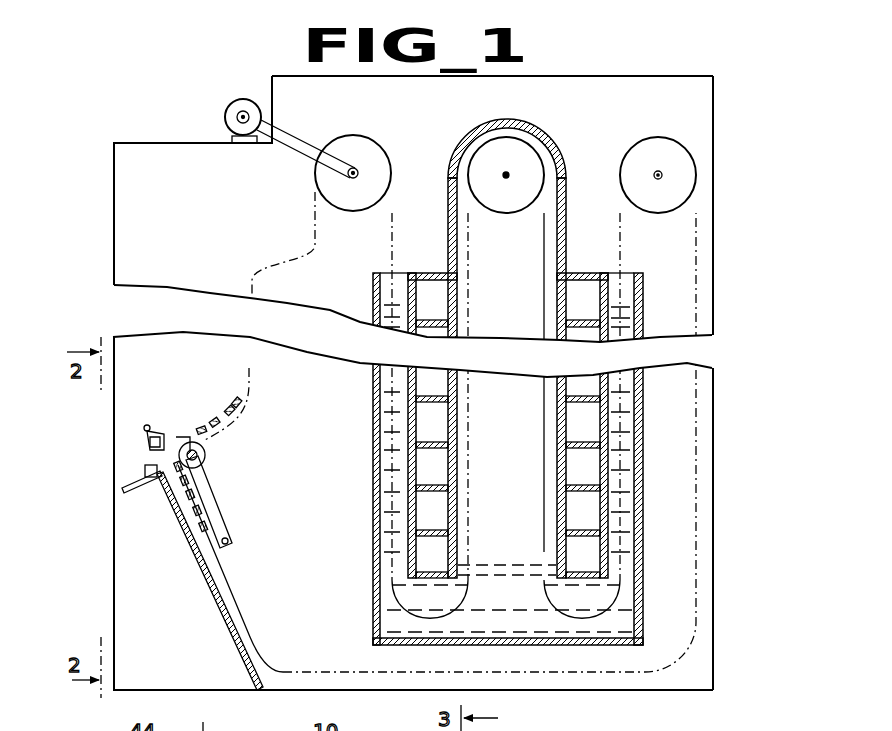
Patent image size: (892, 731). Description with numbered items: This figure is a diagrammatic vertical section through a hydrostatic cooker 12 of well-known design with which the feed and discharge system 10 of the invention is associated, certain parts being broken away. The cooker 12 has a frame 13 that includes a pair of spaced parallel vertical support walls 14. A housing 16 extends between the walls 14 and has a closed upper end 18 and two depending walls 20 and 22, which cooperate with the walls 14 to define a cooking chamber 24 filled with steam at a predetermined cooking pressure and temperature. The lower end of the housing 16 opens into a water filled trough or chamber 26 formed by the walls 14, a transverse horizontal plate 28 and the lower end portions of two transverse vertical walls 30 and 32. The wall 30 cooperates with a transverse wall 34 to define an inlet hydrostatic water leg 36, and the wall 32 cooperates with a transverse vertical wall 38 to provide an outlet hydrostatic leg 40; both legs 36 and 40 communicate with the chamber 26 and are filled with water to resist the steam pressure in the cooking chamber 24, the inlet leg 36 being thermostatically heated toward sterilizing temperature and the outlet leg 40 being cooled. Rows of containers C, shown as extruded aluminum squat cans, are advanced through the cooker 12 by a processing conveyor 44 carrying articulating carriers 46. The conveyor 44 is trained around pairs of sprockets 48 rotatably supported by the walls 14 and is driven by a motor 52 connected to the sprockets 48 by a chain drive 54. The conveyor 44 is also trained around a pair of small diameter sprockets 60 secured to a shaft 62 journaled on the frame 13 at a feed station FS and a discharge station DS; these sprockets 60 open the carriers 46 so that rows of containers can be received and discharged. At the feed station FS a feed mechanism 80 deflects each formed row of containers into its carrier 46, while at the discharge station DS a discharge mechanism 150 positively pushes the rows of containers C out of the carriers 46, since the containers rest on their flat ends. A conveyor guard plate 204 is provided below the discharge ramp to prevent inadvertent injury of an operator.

The feed and discharge system 10 is at (135, 458).
The hydrostatic cooker 12 is at (735, 149).
The frame 13 is at (717, 249).
The vertical support walls 14 is at (712, 372).
The housing 16 is at (565, 247).
The closed upper end 18 is at (498, 118).
The depending wall 20 is at (455, 422).
The depending wall 22 is at (560, 465).
The cooking chamber 24 is at (520, 311).
The water filled trough 26 is at (392, 616).
The transverse horizontal plate 28 is at (393, 644).
The transverse vertical wall 30 is at (373, 530).
The transverse vertical wall 32 is at (643, 527).
The transverse wall 34 is at (410, 432).
The inlet hydrostatic water leg 36 is at (378, 402).
The transverse vertical wall 38 is at (628, 430).
The outlet hydrostatic leg 40 is at (623, 485).
The processing conveyor 44 is at (700, 402).
The articulating carriers 46 is at (240, 412).
The sprockets 48 is at (370, 207).
The motor 52 is at (225, 113).
The chain drive 54 is at (287, 128).
The small diameter sprockets 60 is at (206, 447).
The shaft 62 is at (198, 460).
The feed mechanism 80 is at (163, 424).
The discharge mechanism 150 is at (223, 486).
The conveyor guard plate 204 is at (223, 574).
The feed station FS is at (138, 440).
The discharge station DS is at (131, 477).
The containers C is at (197, 430).